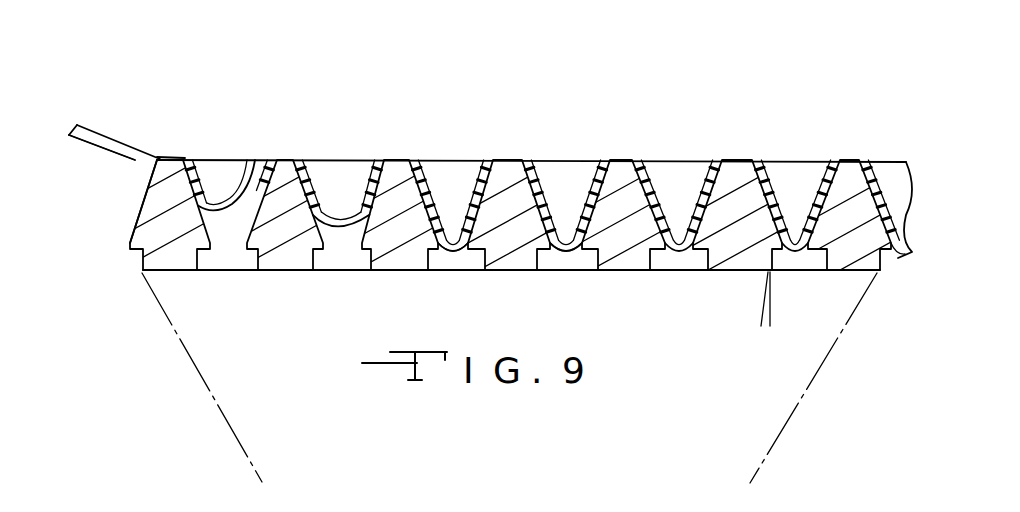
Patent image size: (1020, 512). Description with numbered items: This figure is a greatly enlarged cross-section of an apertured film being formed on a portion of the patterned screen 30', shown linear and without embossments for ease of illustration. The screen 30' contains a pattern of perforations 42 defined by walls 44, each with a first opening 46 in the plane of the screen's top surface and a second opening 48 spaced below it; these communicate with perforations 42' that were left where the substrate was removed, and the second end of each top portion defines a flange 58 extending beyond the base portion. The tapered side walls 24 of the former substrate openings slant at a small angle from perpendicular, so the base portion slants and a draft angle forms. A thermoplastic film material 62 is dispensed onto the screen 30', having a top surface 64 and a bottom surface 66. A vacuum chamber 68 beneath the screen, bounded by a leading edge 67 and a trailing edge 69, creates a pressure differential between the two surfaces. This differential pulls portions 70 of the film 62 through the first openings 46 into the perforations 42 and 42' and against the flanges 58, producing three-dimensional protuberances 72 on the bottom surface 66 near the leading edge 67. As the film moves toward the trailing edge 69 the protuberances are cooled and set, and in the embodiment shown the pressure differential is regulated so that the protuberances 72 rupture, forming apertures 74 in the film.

The side walls 24 is at (205, 271).
The belt 30' is at (116, 224).
The perforations 42 is at (566, 165).
The perforations 42' is at (456, 309).
The walls 44 is at (203, 190).
The first opening 46 is at (240, 167).
The second opening 48 is at (224, 246).
The flange 58 is at (374, 244).
The thermoplastic film material 62 is at (110, 127).
The top surface 64 is at (118, 147).
The bottom surface 66 is at (97, 166).
The leading edge 67 is at (223, 410).
The vacuum chamber 68 is at (482, 438).
The trailing edge 69 is at (813, 377).
The portions 70 is at (255, 160).
The protuberances 72 is at (648, 173).
The apertures 74 is at (452, 242).